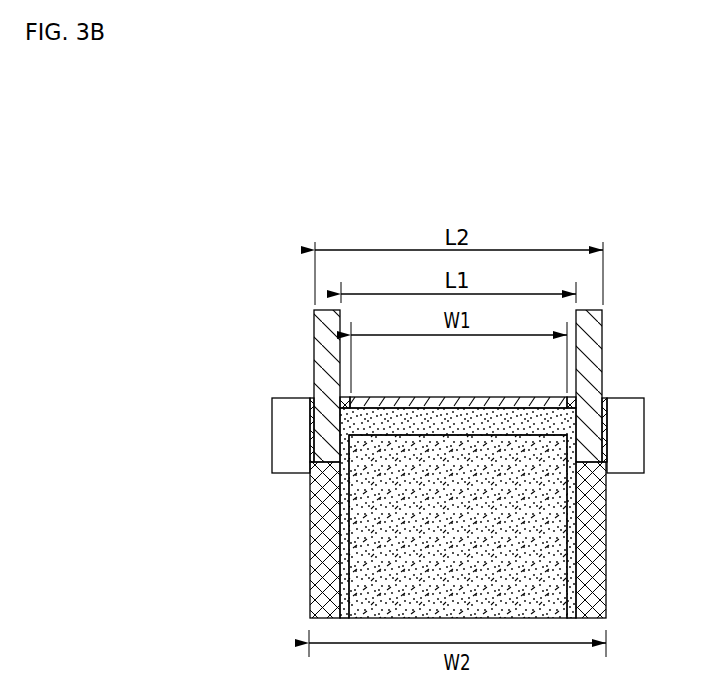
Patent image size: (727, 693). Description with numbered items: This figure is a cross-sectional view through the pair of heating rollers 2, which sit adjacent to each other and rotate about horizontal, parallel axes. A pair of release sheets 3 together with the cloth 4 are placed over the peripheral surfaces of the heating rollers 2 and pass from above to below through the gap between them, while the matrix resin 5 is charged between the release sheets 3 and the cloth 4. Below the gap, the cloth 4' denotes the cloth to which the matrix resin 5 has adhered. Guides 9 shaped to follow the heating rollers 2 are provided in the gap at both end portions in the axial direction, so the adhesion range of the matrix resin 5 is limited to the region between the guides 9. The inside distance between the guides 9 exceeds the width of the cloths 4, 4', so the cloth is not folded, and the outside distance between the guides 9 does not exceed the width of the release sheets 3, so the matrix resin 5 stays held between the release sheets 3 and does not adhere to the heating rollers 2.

The heating rollers 2 is at (282, 438).
The release sheets 3 is at (593, 555).
The cloth 4 is at (458, 384).
The cloth to which the matrix resin adheres 4' is at (519, 526).
The matrix resin 5 is at (420, 420).
The guides 9 is at (323, 373).